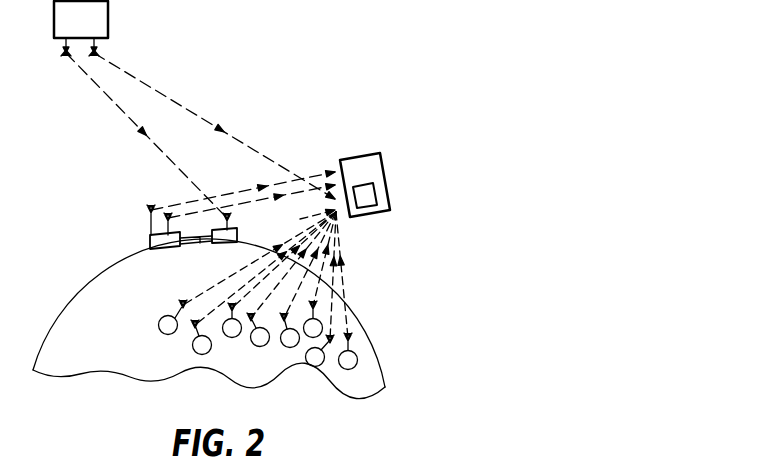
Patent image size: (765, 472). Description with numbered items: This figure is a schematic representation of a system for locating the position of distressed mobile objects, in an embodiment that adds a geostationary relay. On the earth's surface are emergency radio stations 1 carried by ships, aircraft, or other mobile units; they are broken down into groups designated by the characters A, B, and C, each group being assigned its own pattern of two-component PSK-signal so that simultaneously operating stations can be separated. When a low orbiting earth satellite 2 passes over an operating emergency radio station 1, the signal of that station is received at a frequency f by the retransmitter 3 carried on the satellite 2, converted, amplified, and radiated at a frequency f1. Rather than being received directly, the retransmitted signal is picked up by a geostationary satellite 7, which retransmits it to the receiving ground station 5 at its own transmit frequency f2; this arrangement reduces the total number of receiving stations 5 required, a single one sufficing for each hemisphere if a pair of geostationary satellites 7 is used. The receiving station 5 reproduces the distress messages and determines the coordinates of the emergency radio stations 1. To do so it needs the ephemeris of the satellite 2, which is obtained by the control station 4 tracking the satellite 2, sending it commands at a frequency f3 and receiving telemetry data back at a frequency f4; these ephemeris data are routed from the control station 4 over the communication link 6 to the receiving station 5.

The emergency radio station 1 is at (173, 334).
The low orbiting earth satellite 2 is at (380, 157).
The retransmitter 3 is at (377, 188).
The control station 4 is at (150, 245).
The receiving ground station 5 is at (237, 237).
The communication link 6 is at (200, 245).
The geostationary satellite 7 is at (108, 18).
The frequency f is at (342, 243).
The frequency f1 is at (226, 131).
The frequency f2 is at (145, 137).
The frequency f3 is at (303, 192).
The frequency f4 is at (265, 186).